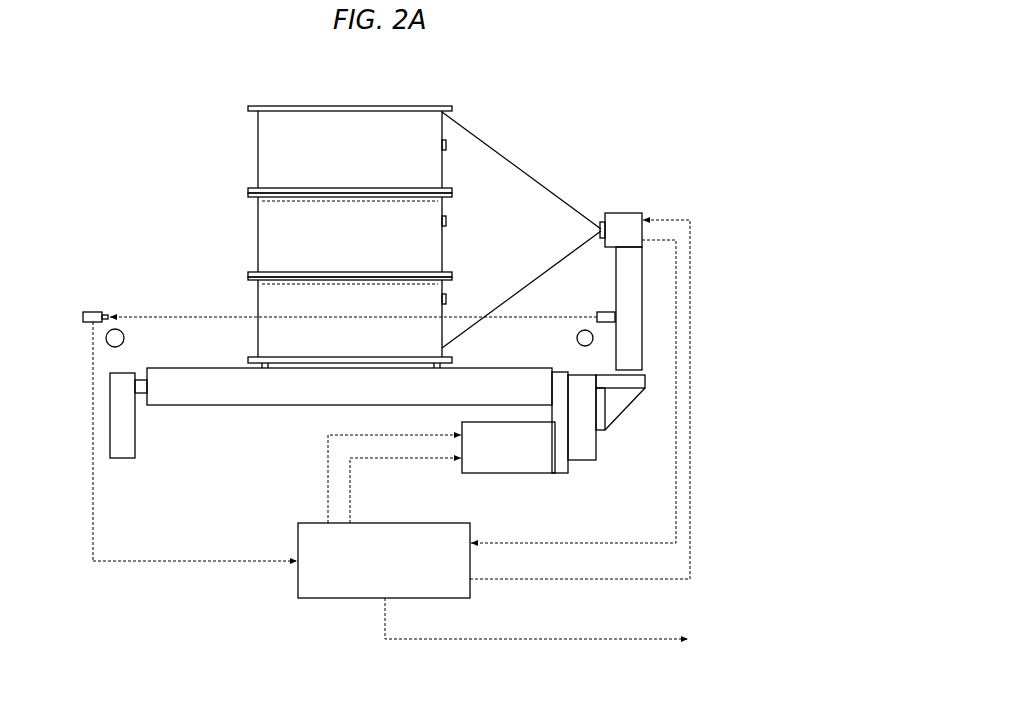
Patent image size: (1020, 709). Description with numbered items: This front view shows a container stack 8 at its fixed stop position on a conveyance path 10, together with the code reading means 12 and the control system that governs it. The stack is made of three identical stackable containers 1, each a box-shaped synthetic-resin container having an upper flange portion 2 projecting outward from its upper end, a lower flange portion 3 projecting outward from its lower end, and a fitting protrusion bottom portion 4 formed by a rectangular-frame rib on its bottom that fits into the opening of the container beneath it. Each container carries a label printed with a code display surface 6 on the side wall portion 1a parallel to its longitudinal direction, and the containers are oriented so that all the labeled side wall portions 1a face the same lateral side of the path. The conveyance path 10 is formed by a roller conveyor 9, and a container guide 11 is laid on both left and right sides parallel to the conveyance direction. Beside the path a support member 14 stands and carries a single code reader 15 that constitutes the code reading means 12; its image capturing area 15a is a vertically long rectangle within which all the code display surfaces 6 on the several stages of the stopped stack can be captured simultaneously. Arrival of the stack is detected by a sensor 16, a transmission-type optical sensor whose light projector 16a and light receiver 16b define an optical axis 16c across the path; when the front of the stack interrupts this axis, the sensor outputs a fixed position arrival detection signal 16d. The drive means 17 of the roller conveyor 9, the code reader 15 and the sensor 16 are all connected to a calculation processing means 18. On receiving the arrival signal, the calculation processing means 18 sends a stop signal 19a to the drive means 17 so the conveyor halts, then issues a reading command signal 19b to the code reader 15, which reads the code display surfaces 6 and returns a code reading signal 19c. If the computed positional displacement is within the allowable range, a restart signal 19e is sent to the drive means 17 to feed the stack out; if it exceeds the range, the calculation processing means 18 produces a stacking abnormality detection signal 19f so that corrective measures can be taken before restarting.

The stackable container 1 is at (255, 150).
The side wall portion 1a is at (446, 125).
The upper flange portion 2 is at (328, 106).
The lower flange portion 3 is at (396, 188).
The fitting protrusion bottom portion 4 is at (298, 201).
The code display surface 6 is at (446, 148).
The container stack 8 is at (297, 103).
The roller conveyor 9 is at (193, 407).
The conveyance path 10 is at (203, 357).
The container guide 11 is at (108, 338).
The code reading means 12 is at (622, 212).
The support member 14 is at (636, 303).
The code reader 15 is at (624, 240).
The image capturing area 15a is at (511, 159).
The sensor 16 is at (82, 317).
The light projector 16a is at (602, 312).
The light receiver 16b is at (92, 312).
The optical axis 16c is at (518, 316).
The fixed position arrival detection signal 16d is at (250, 564).
The drive means 17 is at (504, 474).
The calculation processing means 18 is at (340, 600).
The stop signal 19a is at (326, 462).
The reading command signal 19b is at (594, 581).
The code reading signal 19c is at (640, 541).
The restart signal 19e is at (424, 462).
The stacking abnormality detection signal 19f is at (497, 642).